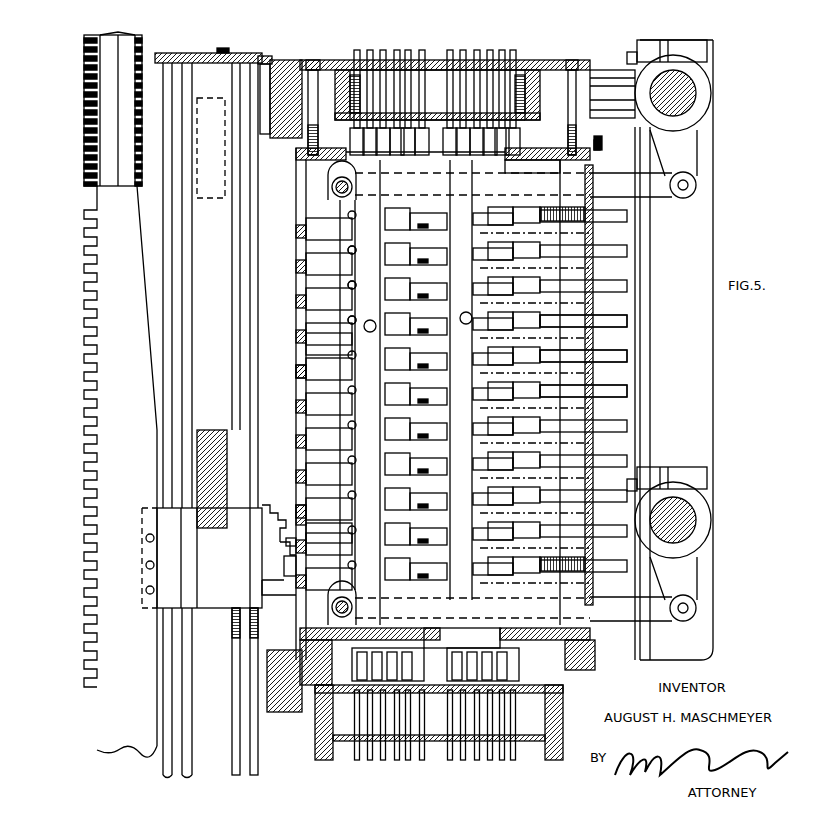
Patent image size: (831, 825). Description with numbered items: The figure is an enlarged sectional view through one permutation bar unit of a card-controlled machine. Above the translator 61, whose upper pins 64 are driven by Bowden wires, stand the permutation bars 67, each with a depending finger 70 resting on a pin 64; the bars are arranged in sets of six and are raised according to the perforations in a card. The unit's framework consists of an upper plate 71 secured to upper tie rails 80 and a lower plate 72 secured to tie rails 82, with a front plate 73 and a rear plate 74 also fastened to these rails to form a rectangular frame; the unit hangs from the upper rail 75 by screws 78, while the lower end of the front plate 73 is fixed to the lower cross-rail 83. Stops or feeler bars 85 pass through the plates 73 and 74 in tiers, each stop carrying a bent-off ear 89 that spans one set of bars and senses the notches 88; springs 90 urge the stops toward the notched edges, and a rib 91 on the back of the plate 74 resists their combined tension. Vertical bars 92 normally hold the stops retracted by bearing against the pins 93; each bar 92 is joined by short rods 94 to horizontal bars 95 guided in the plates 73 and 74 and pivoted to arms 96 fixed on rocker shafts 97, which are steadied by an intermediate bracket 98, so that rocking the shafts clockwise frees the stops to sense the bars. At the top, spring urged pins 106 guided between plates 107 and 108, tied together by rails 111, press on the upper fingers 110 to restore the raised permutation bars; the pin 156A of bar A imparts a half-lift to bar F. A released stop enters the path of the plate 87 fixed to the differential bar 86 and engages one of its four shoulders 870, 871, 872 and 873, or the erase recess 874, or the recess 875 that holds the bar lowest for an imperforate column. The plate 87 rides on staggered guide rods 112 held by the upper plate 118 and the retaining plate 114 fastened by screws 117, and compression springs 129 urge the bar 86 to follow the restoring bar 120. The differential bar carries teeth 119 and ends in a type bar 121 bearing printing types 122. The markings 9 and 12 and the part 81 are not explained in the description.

The section line 9 is at (538, 128).
The section line 12 is at (409, 160).
The translator 61 is at (563, 690).
The upper pins 64 is at (420, 760).
The permutation bars 67 is at (515, 640).
The depending finger 70 is at (398, 660).
The upper plate 71 is at (552, 162).
The lower plate 72 is at (550, 626).
The front plate 73 is at (298, 374).
The rear plate 74 is at (593, 265).
The upper rail 75 is at (286, 60).
The screws 78 is at (313, 60).
The upper tie rails 80 is at (296, 131).
The stop screw 81 is at (296, 158).
The tie rails 82 is at (326, 640).
The lower cross-rail 83 is at (285, 712).
The stops or feeler bars 85 is at (620, 394).
The differential bar 86 is at (110, 562).
The plate 87 is at (207, 570).
The notches 88 is at (392, 368).
The ear 89 is at (505, 426).
The springs 90 is at (585, 222).
The rib 91 is at (620, 305).
The vertical bars 92 is at (340, 345).
The pins or extrusions 93 is at (346, 320).
The short rod 94 is at (334, 195).
The horizontal bars 95 is at (660, 195).
The arms 96 is at (713, 356).
The rocker shafts 97 is at (676, 78).
The intermediate bracket 98 is at (690, 150).
The spring urged pins 106 is at (372, 50).
The plate 107 is at (400, 50).
The plate 108 is at (432, 60).
The upper fingers 110 is at (310, 160).
The rails 111 is at (332, 60).
The guide rods 112 is at (250, 356).
The plate 114 is at (196, 53).
The screws 117 is at (225, 48).
The upper plate 118 is at (265, 56).
The teeth 119 is at (84, 354).
The restoring bar 120 is at (217, 452).
The type bar 121 is at (125, 44).
The printing types 122 is at (84, 138).
The compression springs 129 is at (238, 638).
The pin 156A is at (373, 331).
The shoulder 870 is at (270, 505).
The shoulder 871 is at (283, 518).
The shoulder 872 is at (296, 518).
The shoulder 873 is at (300, 515).
The recess 874 is at (286, 540).
The recess 875 is at (284, 566).